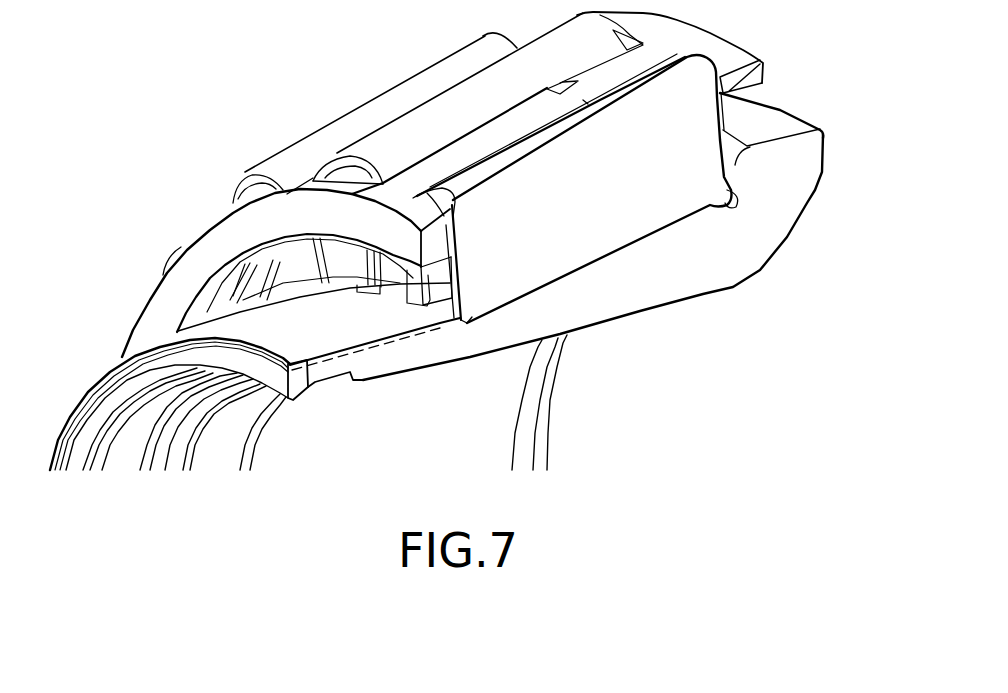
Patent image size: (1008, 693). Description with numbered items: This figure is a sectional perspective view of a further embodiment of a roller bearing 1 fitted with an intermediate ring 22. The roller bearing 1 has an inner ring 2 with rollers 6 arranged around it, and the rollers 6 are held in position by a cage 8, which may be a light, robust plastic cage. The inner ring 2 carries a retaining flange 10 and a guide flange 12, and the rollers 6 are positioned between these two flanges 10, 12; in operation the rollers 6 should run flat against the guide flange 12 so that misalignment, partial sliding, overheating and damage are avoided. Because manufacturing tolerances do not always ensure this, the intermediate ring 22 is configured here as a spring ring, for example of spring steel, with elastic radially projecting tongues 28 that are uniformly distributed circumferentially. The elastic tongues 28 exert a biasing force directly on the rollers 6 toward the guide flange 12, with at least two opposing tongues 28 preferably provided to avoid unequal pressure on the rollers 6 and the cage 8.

The roller bearing 1 is at (195, 108).
The inner ring 2 is at (747, 257).
The rollers 6 is at (433, 116).
The cage 8 is at (297, 217).
The retaining flange 10 is at (460, 321).
The guide flange 12 is at (733, 172).
The intermediate ring 22 is at (377, 340).
The elastic tongues 28 is at (447, 293).